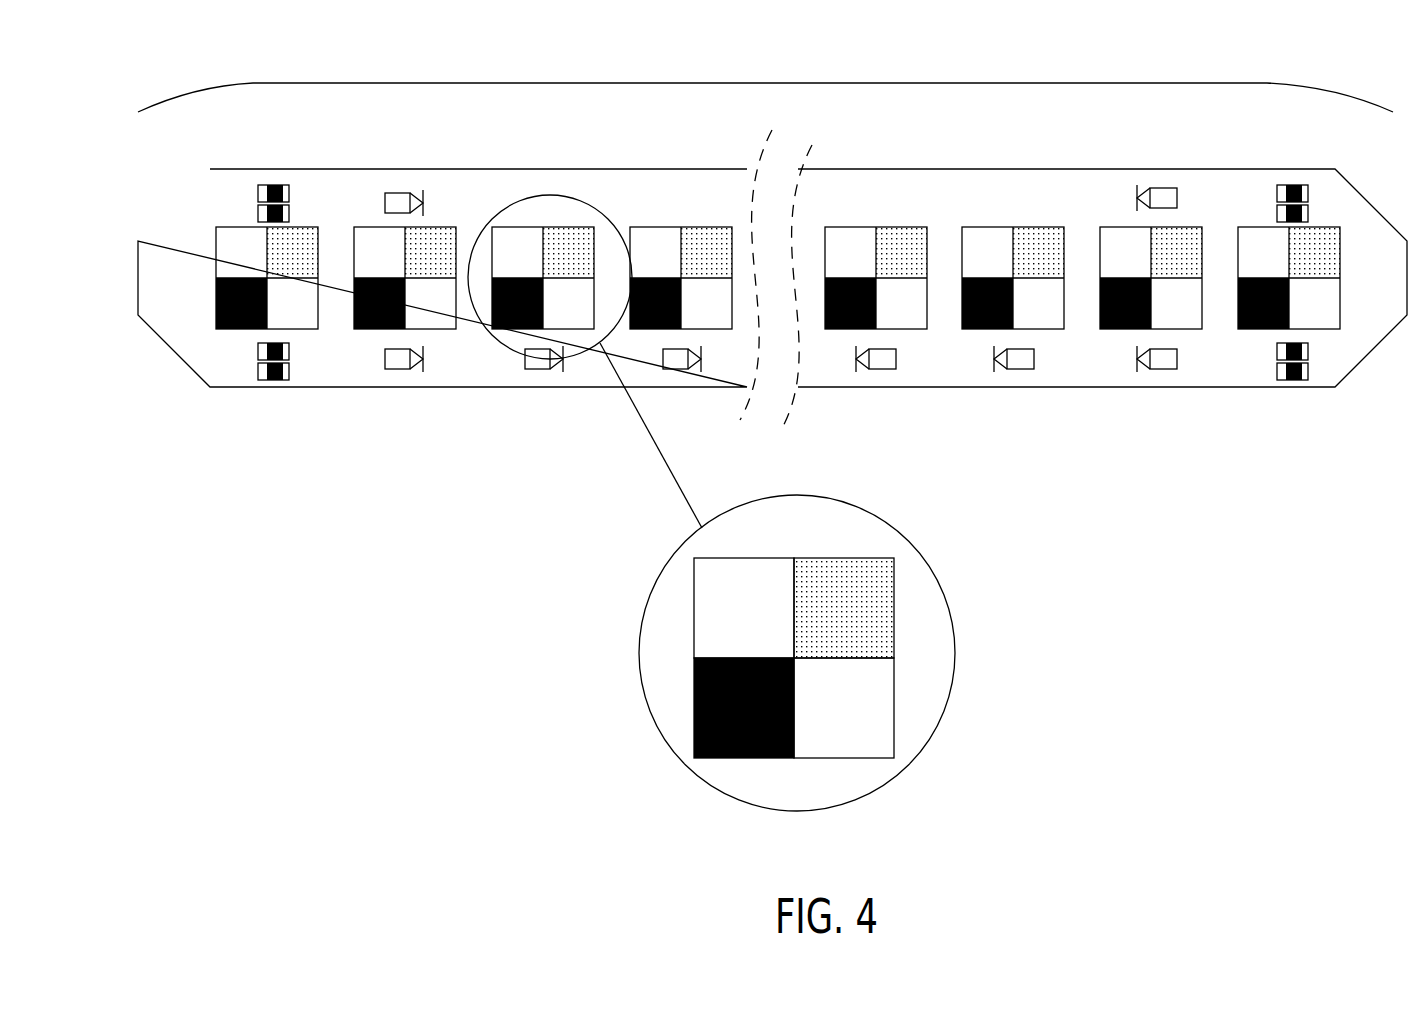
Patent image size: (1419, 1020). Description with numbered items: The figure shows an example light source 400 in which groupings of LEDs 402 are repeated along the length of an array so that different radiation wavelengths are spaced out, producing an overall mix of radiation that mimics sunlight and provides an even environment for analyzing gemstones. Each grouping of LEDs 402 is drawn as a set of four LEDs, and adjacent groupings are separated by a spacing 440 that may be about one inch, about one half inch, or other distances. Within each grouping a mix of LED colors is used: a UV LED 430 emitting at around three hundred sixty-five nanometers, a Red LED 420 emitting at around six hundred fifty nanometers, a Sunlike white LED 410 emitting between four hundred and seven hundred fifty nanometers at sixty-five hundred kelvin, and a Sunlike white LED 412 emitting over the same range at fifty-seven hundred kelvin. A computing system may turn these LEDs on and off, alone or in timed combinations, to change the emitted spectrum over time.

The light source 400 is at (765, 83).
The groupings of LEDs 402 is at (235, 203).
The spacing between LED groupings 440 is at (360, 225).
The Sunlike white LED (6500K) 410 is at (702, 602).
The Red LED 420 is at (873, 598).
The UV LED 430 is at (715, 718).
The Sunlike white LED (5700K) 412 is at (873, 743).